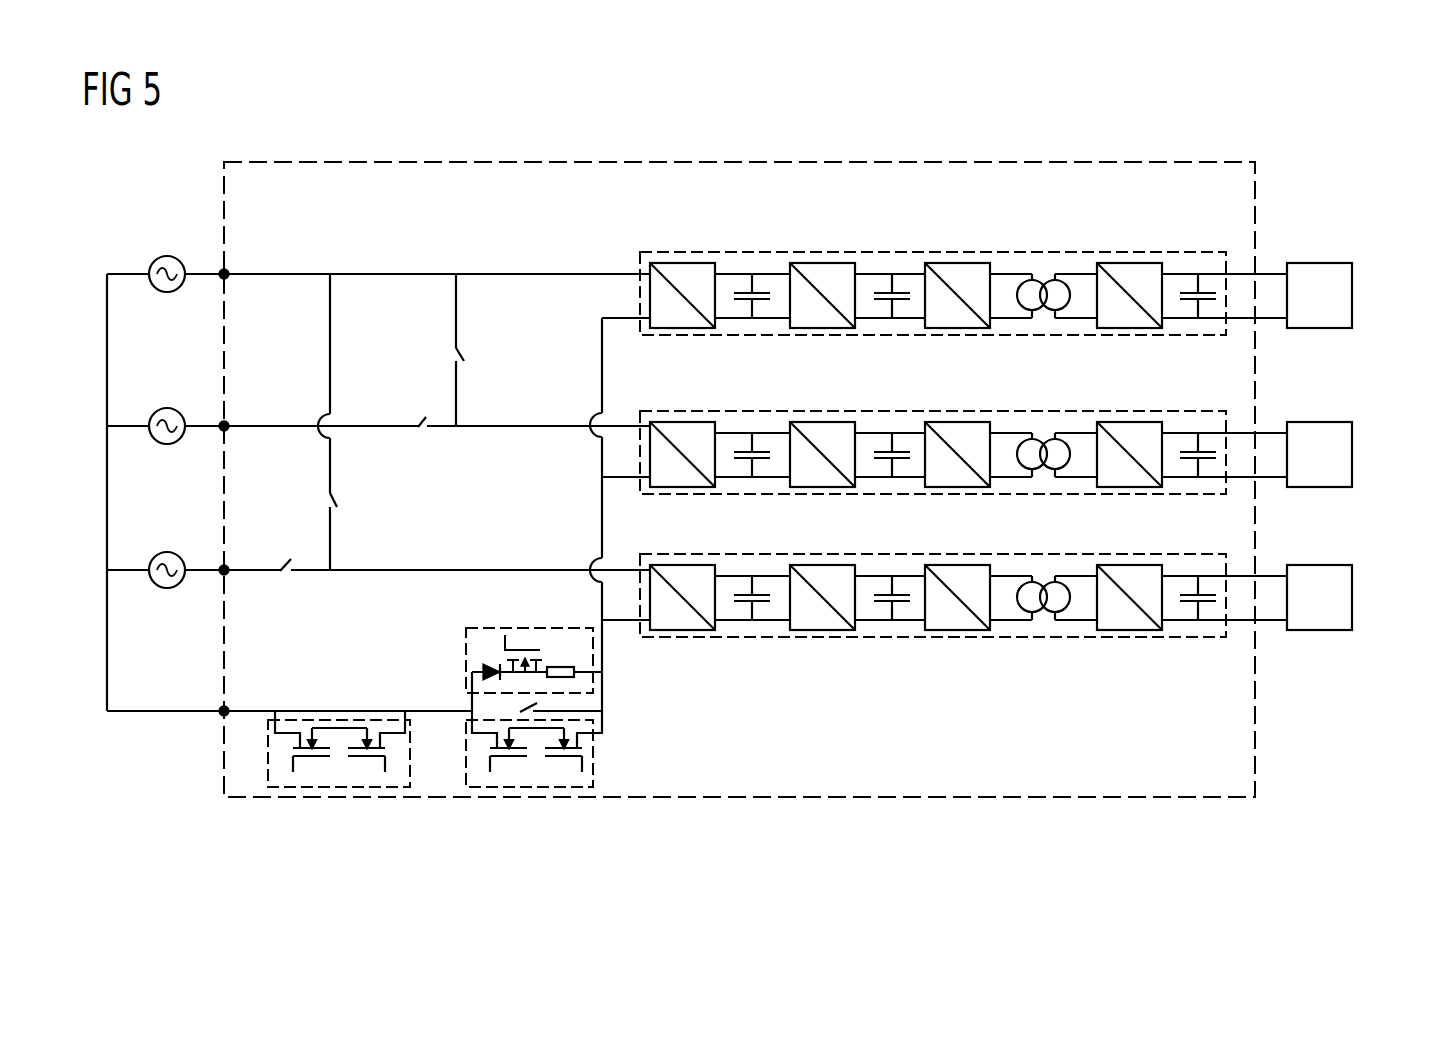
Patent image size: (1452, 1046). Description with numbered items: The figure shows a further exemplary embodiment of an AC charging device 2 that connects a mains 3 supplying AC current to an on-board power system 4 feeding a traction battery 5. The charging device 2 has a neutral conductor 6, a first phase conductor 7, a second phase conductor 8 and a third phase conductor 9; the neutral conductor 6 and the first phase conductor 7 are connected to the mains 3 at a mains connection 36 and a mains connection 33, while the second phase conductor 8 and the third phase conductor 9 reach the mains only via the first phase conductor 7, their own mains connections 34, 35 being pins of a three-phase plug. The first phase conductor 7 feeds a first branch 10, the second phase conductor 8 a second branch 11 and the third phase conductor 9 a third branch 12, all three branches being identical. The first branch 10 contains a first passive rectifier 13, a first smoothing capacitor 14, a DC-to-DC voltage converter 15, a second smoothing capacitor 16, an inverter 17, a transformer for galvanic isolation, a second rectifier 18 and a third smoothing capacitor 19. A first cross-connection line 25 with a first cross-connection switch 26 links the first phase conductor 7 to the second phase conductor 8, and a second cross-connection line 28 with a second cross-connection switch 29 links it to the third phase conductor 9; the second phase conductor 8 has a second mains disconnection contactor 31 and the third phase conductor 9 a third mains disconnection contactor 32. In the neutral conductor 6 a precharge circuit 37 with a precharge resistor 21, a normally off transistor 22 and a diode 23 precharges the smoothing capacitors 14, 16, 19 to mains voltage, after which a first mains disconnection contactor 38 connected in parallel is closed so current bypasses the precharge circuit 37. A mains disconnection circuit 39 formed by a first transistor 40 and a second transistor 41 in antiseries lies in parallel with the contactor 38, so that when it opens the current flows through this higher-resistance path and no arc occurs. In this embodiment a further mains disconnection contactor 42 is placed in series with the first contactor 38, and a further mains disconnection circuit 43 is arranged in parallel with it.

The AC charging device 2 is at (801, 160).
The mains 3 is at (167, 256).
The on-board power system 4 is at (1277, 261).
The traction battery 5 is at (1353, 296).
The neutral conductor 6 is at (249, 709).
The first phase conductor 7 is at (290, 272).
The second phase conductor 8 is at (287, 424).
The third phase conductor 9 is at (557, 568).
The first branch 10 is at (1042, 251).
The second branch 11 is at (1200, 410).
The third branch 12 is at (1137, 641).
The first passive rectifier 13 is at (683, 262).
The first smoothing capacitor 14 is at (750, 290).
The DC-to-DC voltage converter 15 is at (820, 262).
The second smoothing capacitor 16 is at (890, 290).
The inverter 17 is at (955, 262).
The second rectifier 18 is at (1128, 262).
The third smoothing capacitor 19 is at (1195, 290).
The precharge resistor 21 is at (562, 666).
The normally off transistor 22 is at (527, 650).
The diode 23 is at (490, 665).
The first cross-connection line 25 is at (455, 326).
The first cross-connection switch 26 is at (456, 351).
The second cross-connection line 28 is at (331, 291).
The second cross-connection switch 29 is at (331, 500).
The second mains disconnection contactor 31 is at (423, 417).
The third mains disconnection contactor 32 is at (290, 564).
The mains connection of the first phase conductor 33 is at (225, 270).
The mains connection of the second phase conductor 34 is at (226, 424).
The mains connection of the third phase conductor 35 is at (224, 568).
The mains connection of the neutral conductor 36 is at (222, 716).
The precharge circuit 37 is at (594, 661).
The first mains disconnection contactor 38 is at (525, 703).
The mains disconnection circuit 39 is at (594, 768).
The first transistor 40 is at (308, 757).
The second transistor 41 is at (368, 757).
The further mains disconnection contactor 42 is at (343, 707).
The further mains disconnection circuit 43 is at (338, 788).